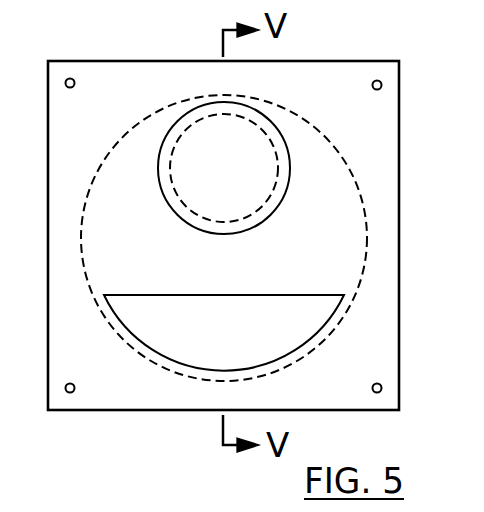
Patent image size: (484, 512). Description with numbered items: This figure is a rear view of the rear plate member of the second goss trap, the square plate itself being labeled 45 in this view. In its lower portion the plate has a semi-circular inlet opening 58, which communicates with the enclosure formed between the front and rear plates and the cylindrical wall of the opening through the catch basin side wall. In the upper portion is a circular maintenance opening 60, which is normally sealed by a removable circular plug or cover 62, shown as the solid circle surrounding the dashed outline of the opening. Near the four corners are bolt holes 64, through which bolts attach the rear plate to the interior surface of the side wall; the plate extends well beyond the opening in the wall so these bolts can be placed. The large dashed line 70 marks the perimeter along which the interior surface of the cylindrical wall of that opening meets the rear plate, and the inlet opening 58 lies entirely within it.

The mounting plate 45 is at (294, 61).
The semi-circular inlet opening 58 is at (319, 319).
The upper circular maintenance opening 60 is at (196, 135).
The removable circular plug or cover 62 is at (168, 132).
The bolt holes 64 is at (70, 78).
The dashed line 70 is at (367, 230).